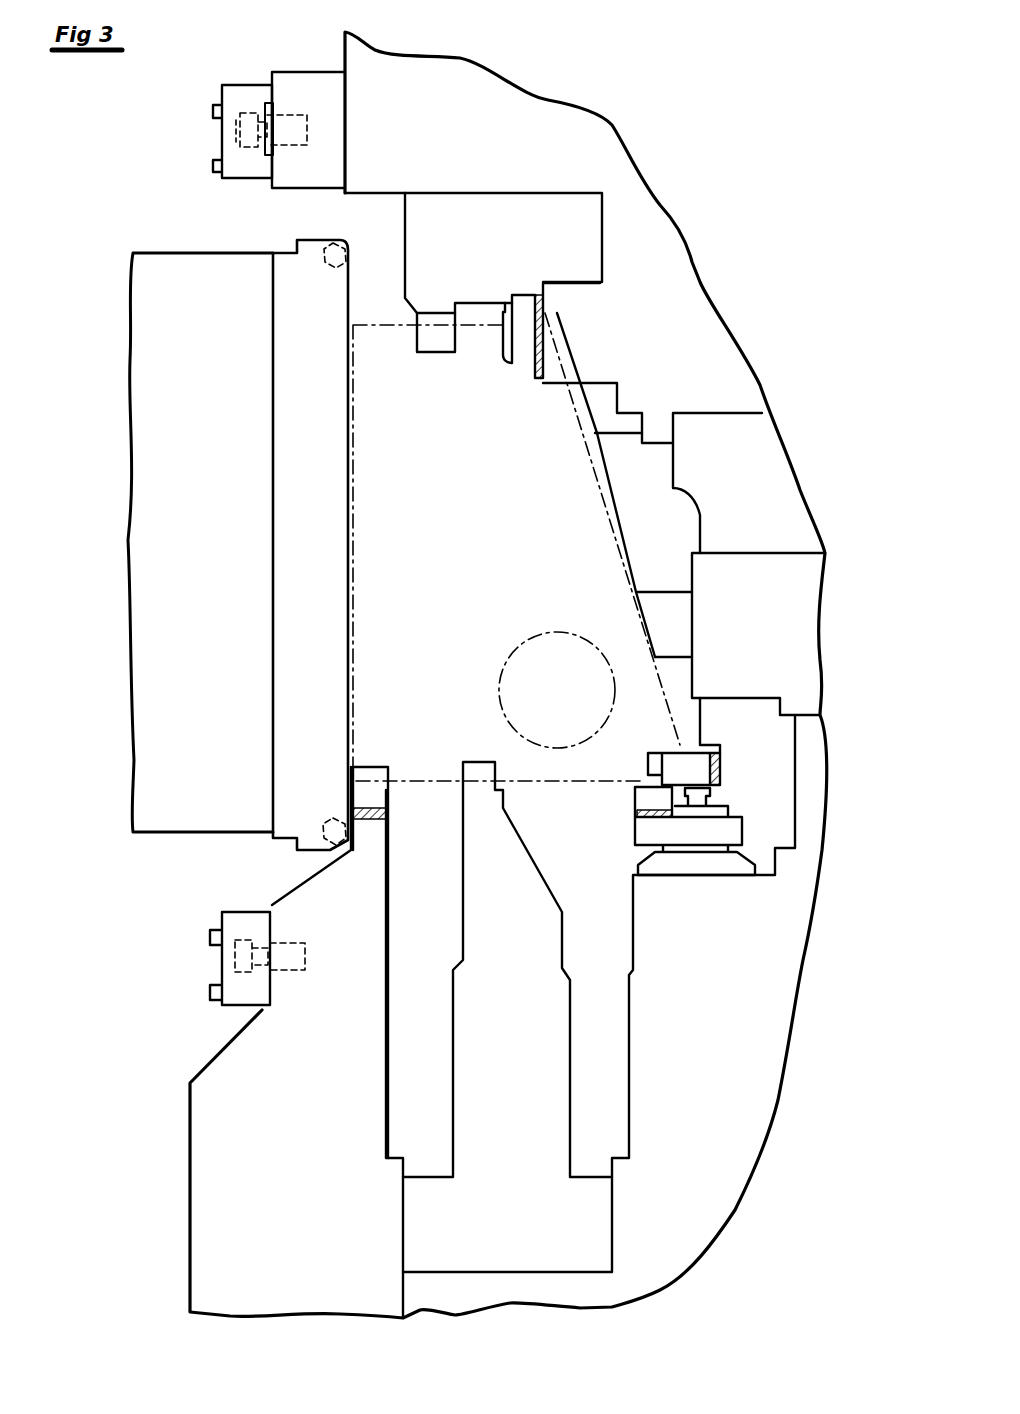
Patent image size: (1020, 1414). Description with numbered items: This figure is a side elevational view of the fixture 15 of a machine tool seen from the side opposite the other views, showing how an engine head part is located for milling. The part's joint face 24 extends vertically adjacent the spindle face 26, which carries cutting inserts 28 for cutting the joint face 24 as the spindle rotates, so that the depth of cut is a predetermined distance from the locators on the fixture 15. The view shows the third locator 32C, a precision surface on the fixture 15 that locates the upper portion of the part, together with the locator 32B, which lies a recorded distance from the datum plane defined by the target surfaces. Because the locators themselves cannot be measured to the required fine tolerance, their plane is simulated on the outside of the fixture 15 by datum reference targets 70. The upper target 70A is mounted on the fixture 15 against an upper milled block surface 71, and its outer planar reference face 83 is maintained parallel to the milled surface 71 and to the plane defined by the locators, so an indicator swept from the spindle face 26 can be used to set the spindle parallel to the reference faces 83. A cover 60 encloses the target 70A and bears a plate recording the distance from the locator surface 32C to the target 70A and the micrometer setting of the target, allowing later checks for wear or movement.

The fixture 15 is at (516, 81).
The joint face 24 is at (353, 512).
The spindle face 26 is at (352, 302).
The cutting inserts 28 is at (347, 243).
The locator surface 32B is at (648, 765).
The locator surface 32C is at (503, 342).
The cover 60 is at (222, 150).
The datum reference target 70 is at (234, 958).
The upper target 70A is at (241, 108).
The upper milled block surface 71 is at (272, 158).
The planar reference face 83 is at (238, 138).